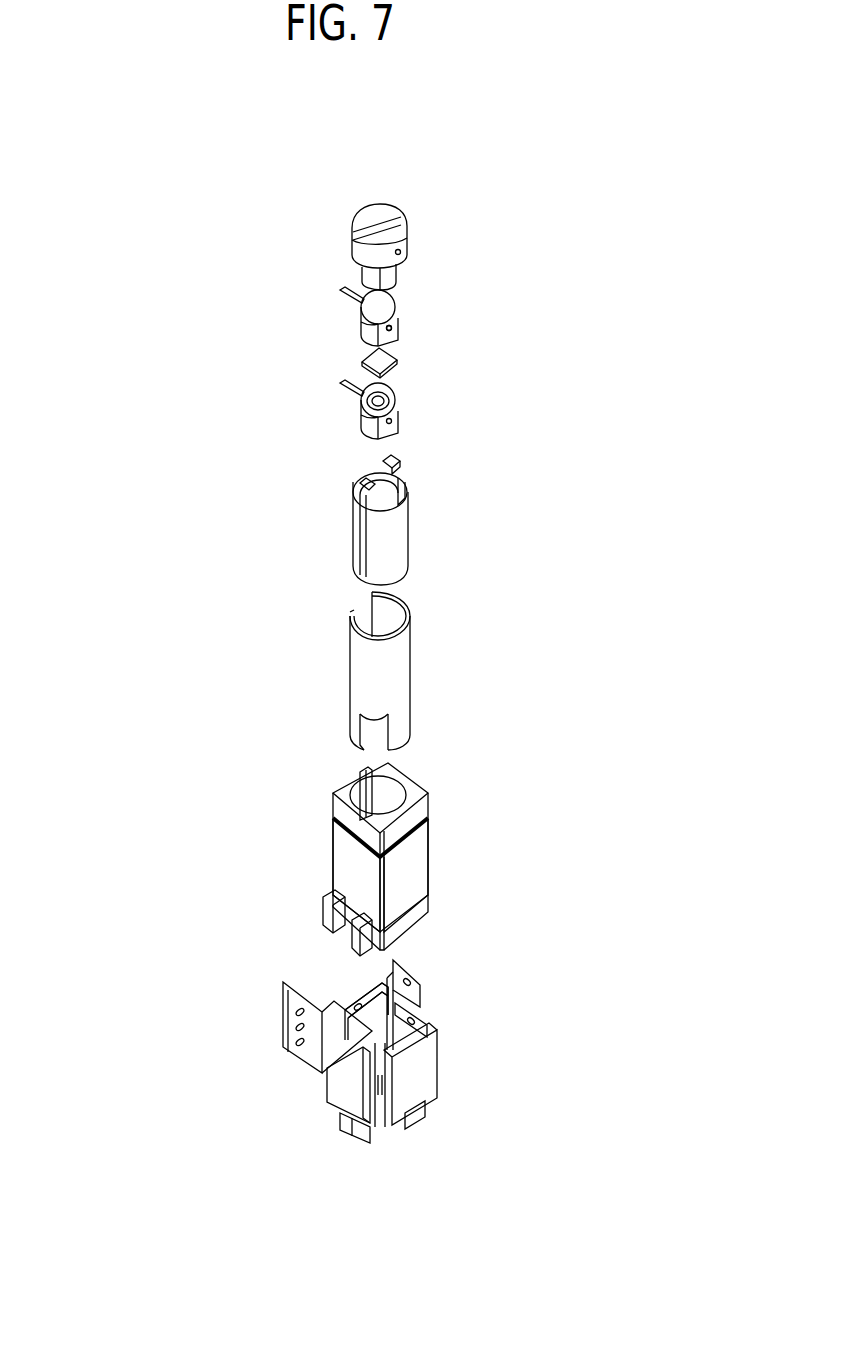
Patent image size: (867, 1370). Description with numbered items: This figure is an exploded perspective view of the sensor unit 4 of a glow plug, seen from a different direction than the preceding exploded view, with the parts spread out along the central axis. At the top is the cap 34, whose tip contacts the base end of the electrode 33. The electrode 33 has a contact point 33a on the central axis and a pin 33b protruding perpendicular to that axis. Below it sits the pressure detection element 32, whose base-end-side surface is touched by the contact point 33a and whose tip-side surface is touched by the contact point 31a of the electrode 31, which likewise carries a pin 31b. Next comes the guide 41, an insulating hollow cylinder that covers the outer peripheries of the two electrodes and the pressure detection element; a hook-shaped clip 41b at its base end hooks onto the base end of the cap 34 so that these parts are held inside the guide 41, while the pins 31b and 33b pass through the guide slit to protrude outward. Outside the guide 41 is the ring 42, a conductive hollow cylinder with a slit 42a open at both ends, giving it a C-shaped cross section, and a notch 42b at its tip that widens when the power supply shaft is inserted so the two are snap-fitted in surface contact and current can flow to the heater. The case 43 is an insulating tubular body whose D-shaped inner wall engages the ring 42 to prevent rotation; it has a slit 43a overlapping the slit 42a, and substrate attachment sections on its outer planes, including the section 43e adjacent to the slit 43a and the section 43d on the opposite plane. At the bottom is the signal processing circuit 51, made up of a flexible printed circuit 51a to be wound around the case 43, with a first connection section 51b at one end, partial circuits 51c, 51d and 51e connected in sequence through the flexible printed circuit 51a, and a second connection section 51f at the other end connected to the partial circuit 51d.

The sensor unit 4 is at (447, 183).
The cap 34 is at (348, 238).
The electrode 33 is at (172, 277).
The contact point 33a is at (393, 332).
The pin 33b is at (340, 292).
The pressure detection element 32 is at (360, 363).
The electrode 31 is at (172, 380).
The contact point 31a is at (393, 401).
The pin 31b is at (340, 385).
The guide 41 is at (172, 457).
The clip 41b is at (383, 463).
The ring 42 is at (172, 588).
The slit 42a is at (370, 603).
The notch 42b is at (366, 728).
The case 43 is at (172, 752).
The slit 43a is at (357, 775).
The substrate attachment section 43d is at (420, 868).
The substrate attachment section 43e is at (340, 868).
The signal processing circuit 51 is at (172, 937).
The flexible printed circuit 51a is at (350, 1130).
The first connection section 51b is at (365, 995).
The partial circuit 51c is at (428, 1000).
The partial circuit 51d is at (438, 1075).
The partial circuit 51e is at (325, 1083).
The second connection section 51f is at (282, 1020).